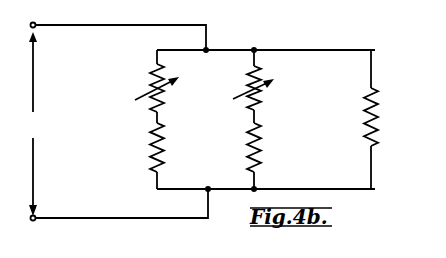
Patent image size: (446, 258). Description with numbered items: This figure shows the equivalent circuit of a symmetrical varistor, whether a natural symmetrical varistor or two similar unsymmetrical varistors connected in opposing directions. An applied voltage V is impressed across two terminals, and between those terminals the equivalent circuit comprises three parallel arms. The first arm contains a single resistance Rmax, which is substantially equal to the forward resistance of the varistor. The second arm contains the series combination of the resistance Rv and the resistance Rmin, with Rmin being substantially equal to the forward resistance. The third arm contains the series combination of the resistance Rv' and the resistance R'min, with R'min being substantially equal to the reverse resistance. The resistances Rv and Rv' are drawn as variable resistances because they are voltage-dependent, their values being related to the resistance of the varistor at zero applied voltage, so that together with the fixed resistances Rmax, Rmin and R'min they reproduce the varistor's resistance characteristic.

The applied voltage V is at (32, 124).
The resistance Rv is at (126, 86).
The resistance Rv' is at (295, 86).
The resistance R min Rmin is at (164, 164).
The resistance R' min R'min is at (281, 156).
The resistance R max Rmax is at (378, 121).